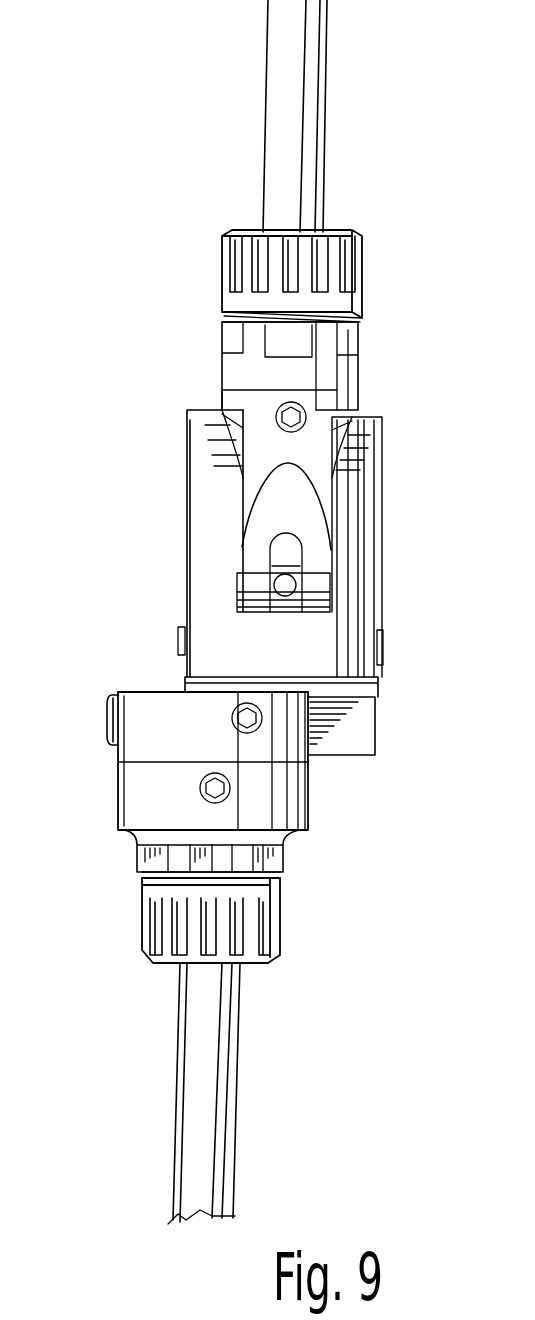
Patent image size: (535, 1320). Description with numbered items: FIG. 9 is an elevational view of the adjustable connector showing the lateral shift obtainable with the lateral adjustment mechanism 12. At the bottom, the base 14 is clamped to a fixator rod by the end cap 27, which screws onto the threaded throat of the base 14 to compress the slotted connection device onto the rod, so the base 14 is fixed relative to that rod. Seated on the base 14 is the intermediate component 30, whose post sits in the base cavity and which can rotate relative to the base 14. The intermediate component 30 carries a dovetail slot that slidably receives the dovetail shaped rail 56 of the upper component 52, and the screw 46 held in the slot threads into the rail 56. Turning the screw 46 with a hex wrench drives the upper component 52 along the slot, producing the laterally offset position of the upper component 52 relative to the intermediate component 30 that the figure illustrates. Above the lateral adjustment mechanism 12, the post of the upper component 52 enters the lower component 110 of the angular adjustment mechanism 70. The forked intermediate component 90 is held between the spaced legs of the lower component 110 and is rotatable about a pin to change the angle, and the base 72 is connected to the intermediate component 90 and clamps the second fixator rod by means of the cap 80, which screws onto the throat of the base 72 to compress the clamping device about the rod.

The lateral adjustment mechanism 12 is at (105, 691).
The base 14 is at (116, 803).
The end cap 27 is at (280, 913).
The intermediate component 30 is at (118, 750).
The screw 46 is at (108, 713).
The upper component 52 is at (182, 685).
The dovetail shaped rail 56 is at (334, 750).
The angular adjustment mechanism 70 is at (185, 223).
The base 72 is at (221, 362).
The cap 80 is at (222, 262).
The intermediate component 90 is at (221, 400).
The lower component 110 is at (189, 516).